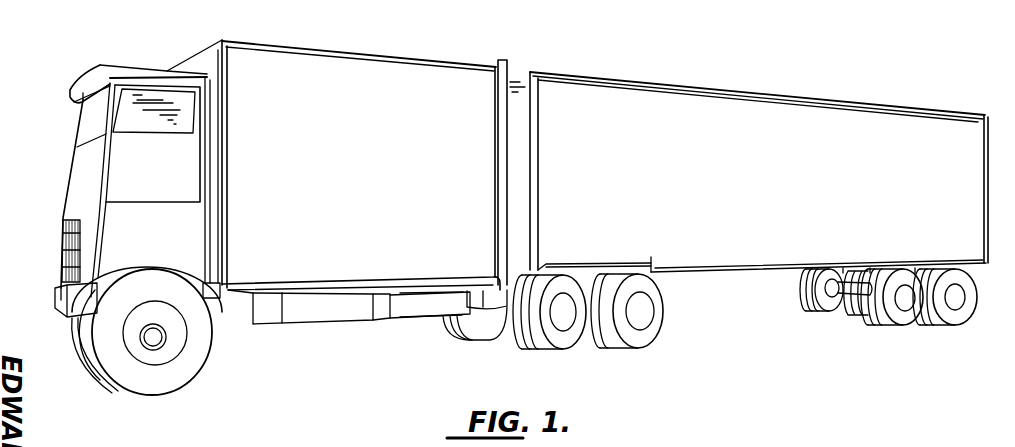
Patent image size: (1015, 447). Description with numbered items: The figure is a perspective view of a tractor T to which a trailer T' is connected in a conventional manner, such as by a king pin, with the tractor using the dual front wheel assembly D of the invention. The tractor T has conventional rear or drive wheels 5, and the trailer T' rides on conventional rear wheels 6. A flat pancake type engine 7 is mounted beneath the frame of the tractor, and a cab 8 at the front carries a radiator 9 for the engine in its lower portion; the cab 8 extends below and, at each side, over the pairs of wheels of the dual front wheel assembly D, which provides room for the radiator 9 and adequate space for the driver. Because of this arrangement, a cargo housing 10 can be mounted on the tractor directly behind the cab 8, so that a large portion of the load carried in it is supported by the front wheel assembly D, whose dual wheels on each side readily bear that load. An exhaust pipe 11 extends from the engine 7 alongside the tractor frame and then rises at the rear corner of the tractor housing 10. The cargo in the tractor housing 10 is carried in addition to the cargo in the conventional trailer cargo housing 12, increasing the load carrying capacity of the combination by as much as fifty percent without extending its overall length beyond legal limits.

The tractor T is at (342, 217).
The trailer T' is at (749, 208).
The rear or drive wheels 5 is at (633, 343).
The rear wheels 6 is at (897, 329).
The pancake type engine 7 is at (347, 315).
The cab 8 is at (80, 154).
The radiator 9 is at (63, 263).
The cargo housing 10 is at (418, 73).
The exhaust pipe 11 is at (510, 60).
The trailer cargo housing 12 is at (650, 98).
The dual front wheel assembly D is at (128, 370).